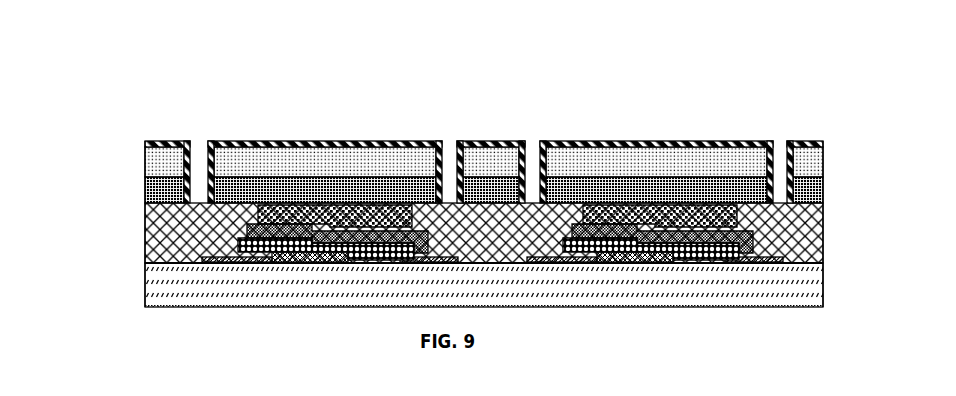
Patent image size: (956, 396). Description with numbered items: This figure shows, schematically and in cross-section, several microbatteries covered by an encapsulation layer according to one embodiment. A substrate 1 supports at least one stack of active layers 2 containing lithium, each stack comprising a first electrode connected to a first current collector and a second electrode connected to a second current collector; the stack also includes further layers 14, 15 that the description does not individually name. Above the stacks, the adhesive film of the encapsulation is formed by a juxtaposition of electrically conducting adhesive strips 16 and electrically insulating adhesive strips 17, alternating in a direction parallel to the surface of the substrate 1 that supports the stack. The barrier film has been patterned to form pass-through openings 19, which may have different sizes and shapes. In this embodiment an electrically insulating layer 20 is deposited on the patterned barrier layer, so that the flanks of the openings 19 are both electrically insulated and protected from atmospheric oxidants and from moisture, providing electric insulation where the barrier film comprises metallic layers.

The substrate 1 is at (640, 288).
The stack of active layers 2 is at (445, 229).
The light emitting layer 14 is at (568, 160).
The first electrode 15 is at (348, 193).
The electrically conducting adhesive strips 16 is at (185, 246).
The electrically insulating adhesive strips 17 is at (323, 212).
The pass-through openings 19 is at (533, 171).
The electrically insulating layer 20 is at (327, 143).